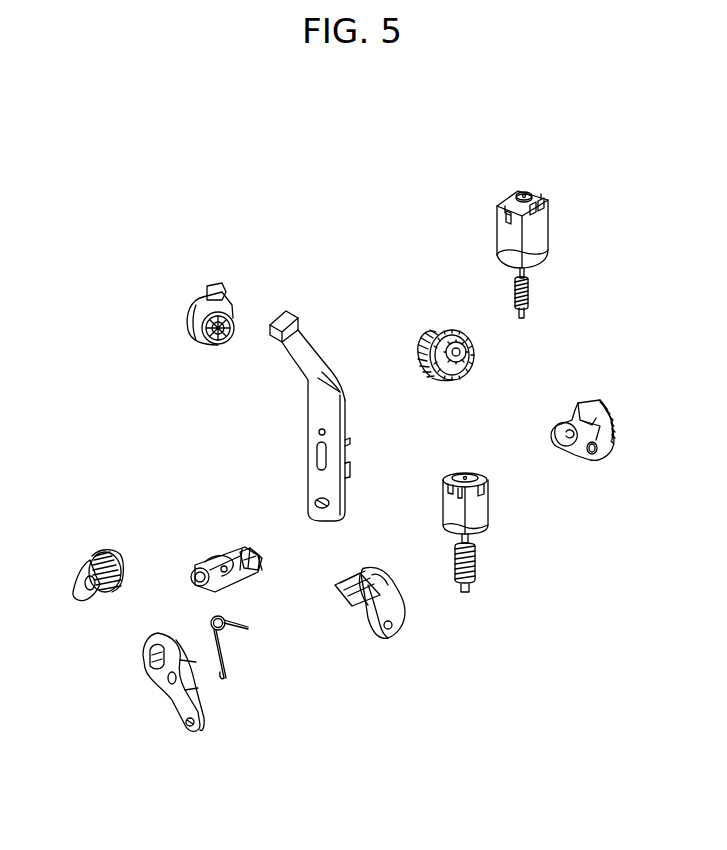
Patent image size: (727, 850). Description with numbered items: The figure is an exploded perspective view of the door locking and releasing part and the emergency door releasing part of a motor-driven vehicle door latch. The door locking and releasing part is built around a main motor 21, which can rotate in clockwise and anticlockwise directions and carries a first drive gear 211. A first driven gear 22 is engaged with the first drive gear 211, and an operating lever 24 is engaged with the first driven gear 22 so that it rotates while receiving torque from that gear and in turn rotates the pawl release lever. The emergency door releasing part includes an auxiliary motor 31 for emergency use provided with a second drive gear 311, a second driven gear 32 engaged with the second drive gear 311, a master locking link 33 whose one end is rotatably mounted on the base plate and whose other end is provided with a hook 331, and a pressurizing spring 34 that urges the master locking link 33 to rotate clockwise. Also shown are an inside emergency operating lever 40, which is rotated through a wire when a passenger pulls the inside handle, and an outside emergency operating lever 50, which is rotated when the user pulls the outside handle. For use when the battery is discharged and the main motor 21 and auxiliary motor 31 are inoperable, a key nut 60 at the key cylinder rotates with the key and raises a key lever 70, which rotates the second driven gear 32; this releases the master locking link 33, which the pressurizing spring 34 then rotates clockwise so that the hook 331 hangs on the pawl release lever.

The main motor 21 is at (542, 232).
The first drive gear 211 is at (529, 294).
The first driven gear 22 is at (432, 328).
The operating lever 24 is at (595, 455).
The auxiliary motor 31 is at (484, 524).
The second drive gear 311 is at (477, 572).
The second driven gear 32 is at (88, 560).
The master locking link 33 is at (215, 563).
The hook 331 is at (233, 548).
The pressurizing spring 34 is at (228, 680).
The inside emergency operating lever 40 is at (385, 638).
The outside emergency operating lever 50 is at (172, 690).
The key nut 60 is at (190, 315).
The key lever 70 is at (310, 438).